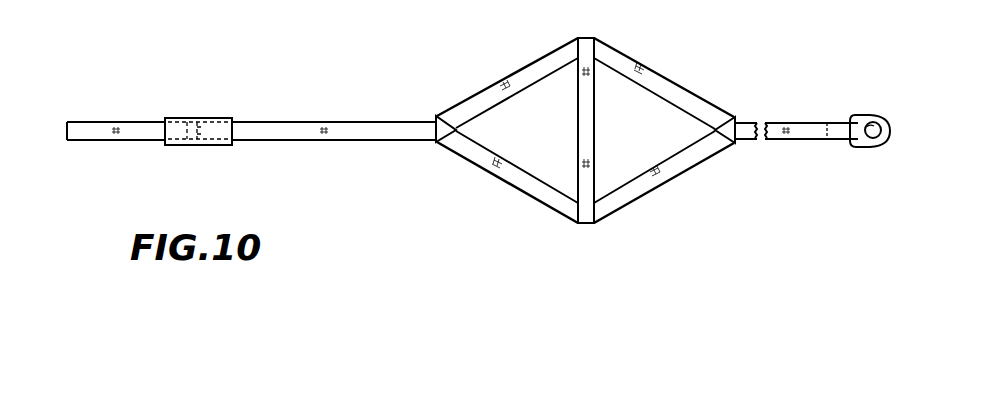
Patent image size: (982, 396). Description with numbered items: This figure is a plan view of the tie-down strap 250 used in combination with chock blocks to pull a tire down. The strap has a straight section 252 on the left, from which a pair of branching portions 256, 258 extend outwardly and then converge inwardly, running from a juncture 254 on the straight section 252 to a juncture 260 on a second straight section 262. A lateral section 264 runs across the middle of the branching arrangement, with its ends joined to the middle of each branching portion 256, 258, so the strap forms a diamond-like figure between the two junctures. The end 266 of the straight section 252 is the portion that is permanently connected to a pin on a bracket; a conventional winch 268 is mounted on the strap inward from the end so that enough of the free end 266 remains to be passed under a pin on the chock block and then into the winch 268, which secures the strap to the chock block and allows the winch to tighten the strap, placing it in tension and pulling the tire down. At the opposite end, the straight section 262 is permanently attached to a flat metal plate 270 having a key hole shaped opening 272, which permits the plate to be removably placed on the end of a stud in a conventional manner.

The tie-down strap 250 is at (432, 84).
The straight section 252 is at (278, 141).
The juncture 254 is at (440, 133).
The branching portion 256 is at (535, 65).
The branching portion 258 is at (540, 200).
The juncture 260 is at (730, 117).
The straight section 262 is at (812, 133).
The lateral section 264 is at (591, 135).
The end 266 is at (83, 130).
The winch 268 is at (205, 120).
The flat metal plate 270 is at (862, 115).
The key hole shaped opening 272 is at (868, 139).